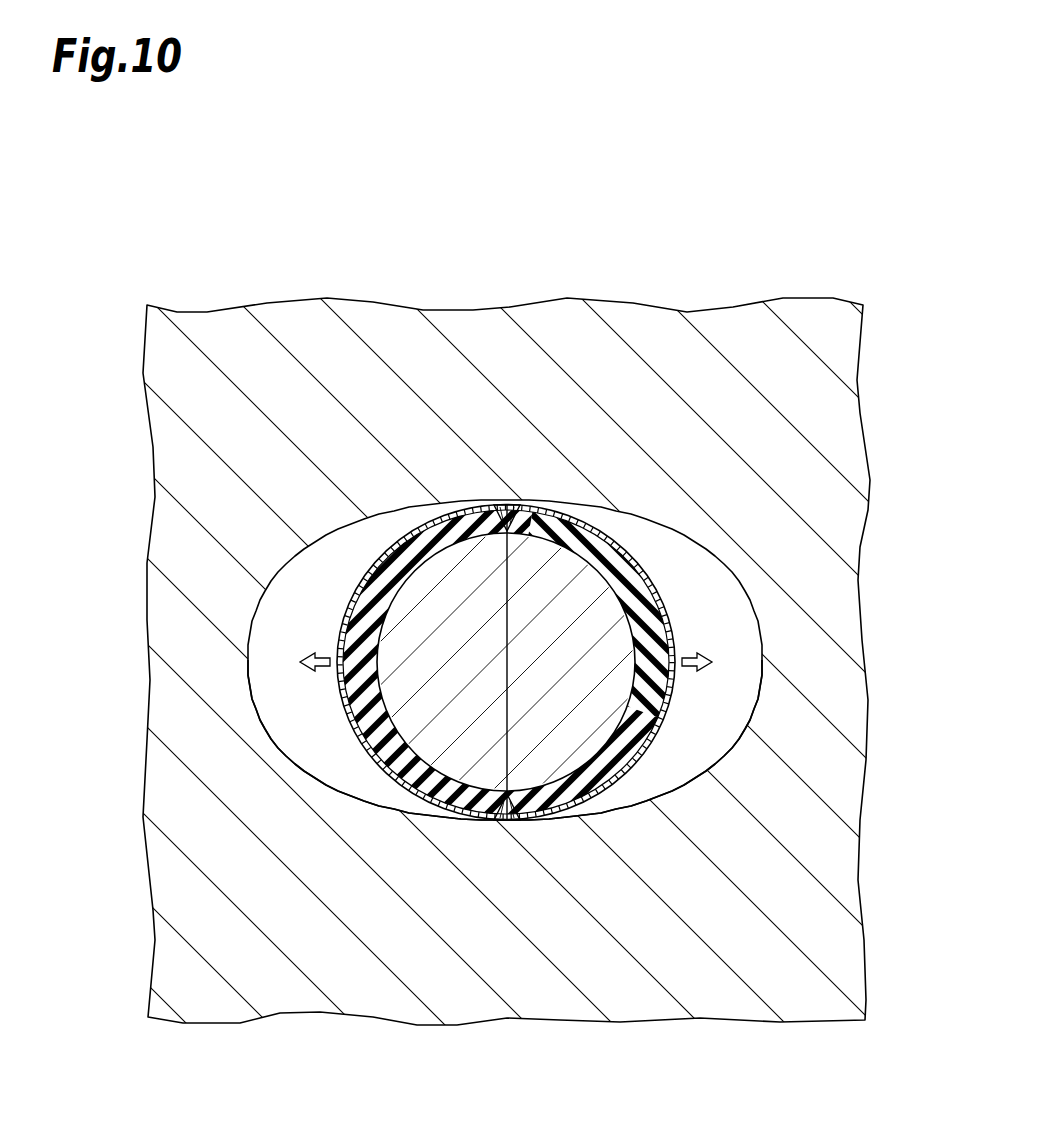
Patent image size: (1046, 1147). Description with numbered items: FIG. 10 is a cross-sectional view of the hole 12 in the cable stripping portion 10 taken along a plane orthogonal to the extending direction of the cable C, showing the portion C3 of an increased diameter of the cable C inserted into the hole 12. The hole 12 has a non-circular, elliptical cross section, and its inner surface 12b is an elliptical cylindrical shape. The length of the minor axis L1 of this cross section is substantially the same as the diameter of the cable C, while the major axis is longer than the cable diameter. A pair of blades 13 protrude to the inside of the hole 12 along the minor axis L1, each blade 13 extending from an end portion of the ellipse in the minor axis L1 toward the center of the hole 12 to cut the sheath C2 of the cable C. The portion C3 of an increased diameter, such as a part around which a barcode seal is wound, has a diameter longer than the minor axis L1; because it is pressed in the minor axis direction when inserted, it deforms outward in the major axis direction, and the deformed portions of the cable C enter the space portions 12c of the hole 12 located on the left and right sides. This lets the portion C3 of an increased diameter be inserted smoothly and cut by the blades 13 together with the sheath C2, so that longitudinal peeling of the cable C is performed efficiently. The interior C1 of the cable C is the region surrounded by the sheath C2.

The cable stripping portion 10 is at (648, 311).
The hole 12 is at (332, 556).
The inner surface 12b is at (367, 797).
The space portions 12c is at (697, 680).
The blade 13 is at (505, 532).
The cable C is at (679, 608).
The inner flow passage C1 is at (563, 742).
The sheath C2 is at (610, 557).
The portion of an increased diameter C3 is at (628, 582).
The minor axis L1 is at (490, 662).